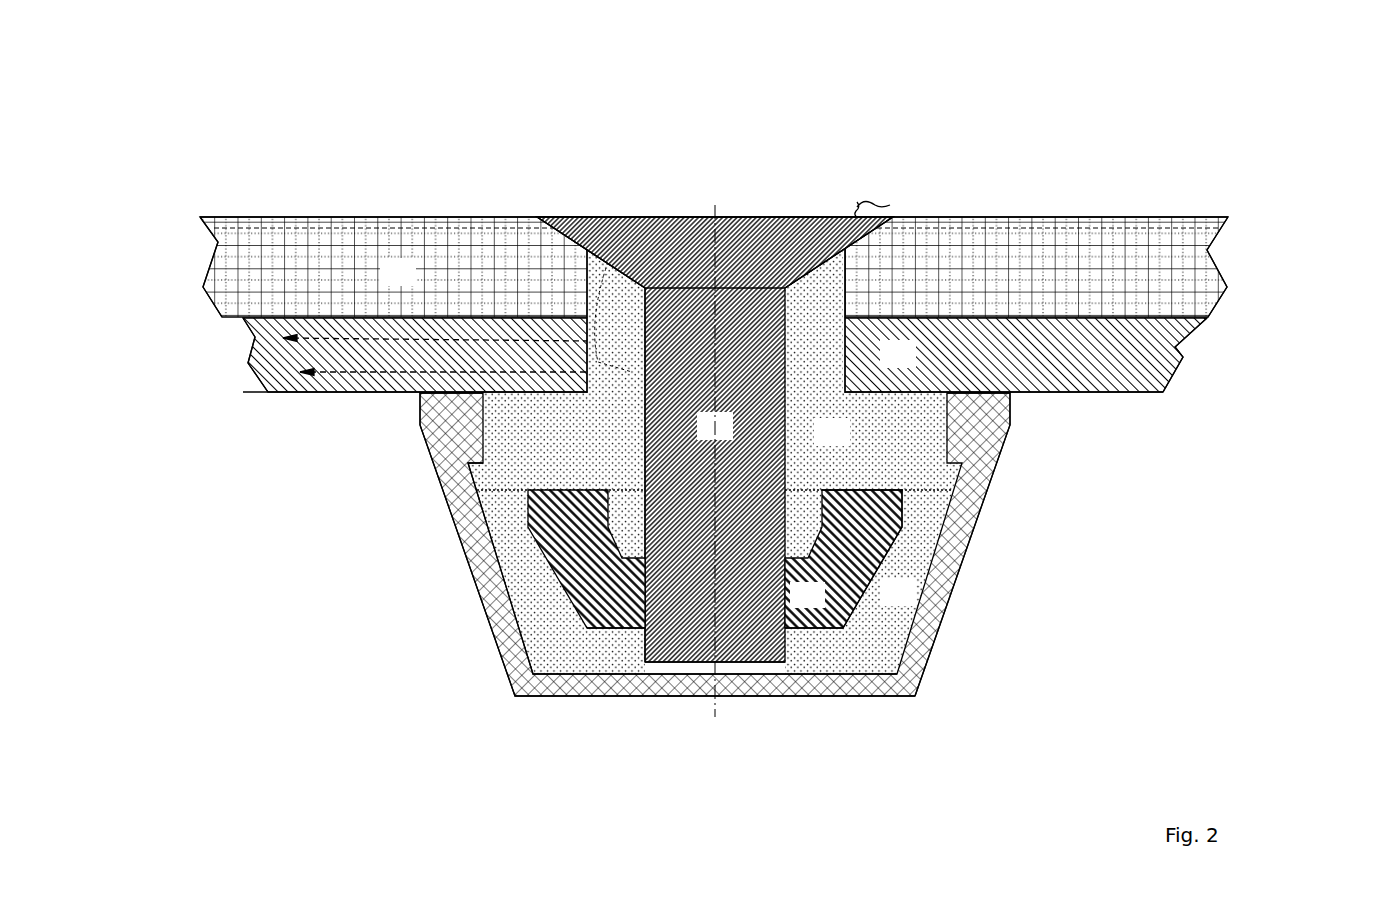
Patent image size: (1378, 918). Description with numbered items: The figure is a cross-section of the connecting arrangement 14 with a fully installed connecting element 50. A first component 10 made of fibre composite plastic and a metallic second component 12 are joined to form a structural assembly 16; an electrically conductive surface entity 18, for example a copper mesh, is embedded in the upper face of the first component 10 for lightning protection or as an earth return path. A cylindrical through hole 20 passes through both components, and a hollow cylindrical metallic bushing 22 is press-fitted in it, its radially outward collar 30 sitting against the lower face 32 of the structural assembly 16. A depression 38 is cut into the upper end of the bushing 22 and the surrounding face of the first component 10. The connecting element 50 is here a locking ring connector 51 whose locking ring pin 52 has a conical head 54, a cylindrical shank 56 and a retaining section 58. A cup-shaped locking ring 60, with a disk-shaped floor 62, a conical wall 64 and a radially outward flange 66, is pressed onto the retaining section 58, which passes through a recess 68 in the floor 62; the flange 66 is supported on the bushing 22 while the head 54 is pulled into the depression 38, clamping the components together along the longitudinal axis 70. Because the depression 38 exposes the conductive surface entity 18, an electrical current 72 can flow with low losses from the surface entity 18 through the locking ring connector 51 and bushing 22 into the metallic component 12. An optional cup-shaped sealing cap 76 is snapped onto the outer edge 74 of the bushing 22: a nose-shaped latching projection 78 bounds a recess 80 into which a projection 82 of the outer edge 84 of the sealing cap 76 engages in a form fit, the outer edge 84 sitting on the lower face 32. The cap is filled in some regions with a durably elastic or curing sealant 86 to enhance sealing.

The first component 10 is at (412, 284).
The second component 12 is at (912, 366).
The connecting arrangement 14 is at (625, 175).
The structural assembly 16 is at (180, 312).
The electrically conductive surface entity 18 is at (286, 224).
The through hole 20 is at (848, 288).
The bushing 22 is at (846, 446).
The collar 30 is at (917, 462).
The lower face 32 is at (1220, 276).
The depression 38 is at (857, 202).
The connecting element 50 is at (788, 180).
The locking ring connector 51 is at (591, 252).
The locking ring pin 52 is at (729, 441).
The conical head 54 is at (680, 217).
The cylindrical shank 56 is at (640, 447).
The retaining section 58 is at (792, 645).
The locking ring 60 is at (819, 608).
The floor 62 is at (620, 630).
The conical wall 64 is at (560, 543).
The flange 66 is at (903, 513).
The recess 68 is at (763, 633).
The longitudinal axis 70 is at (715, 205).
The electrical current 72 is at (445, 333).
The outer edge of the bushing 74 is at (997, 386).
The sealing cap 76 is at (467, 520).
The latching projection 78 is at (481, 478).
The recess 80 is at (420, 413).
The projection 82 is at (1007, 423).
The outer edge of the sealing cap 84 is at (1017, 442).
The sealant 86 is at (911, 604).